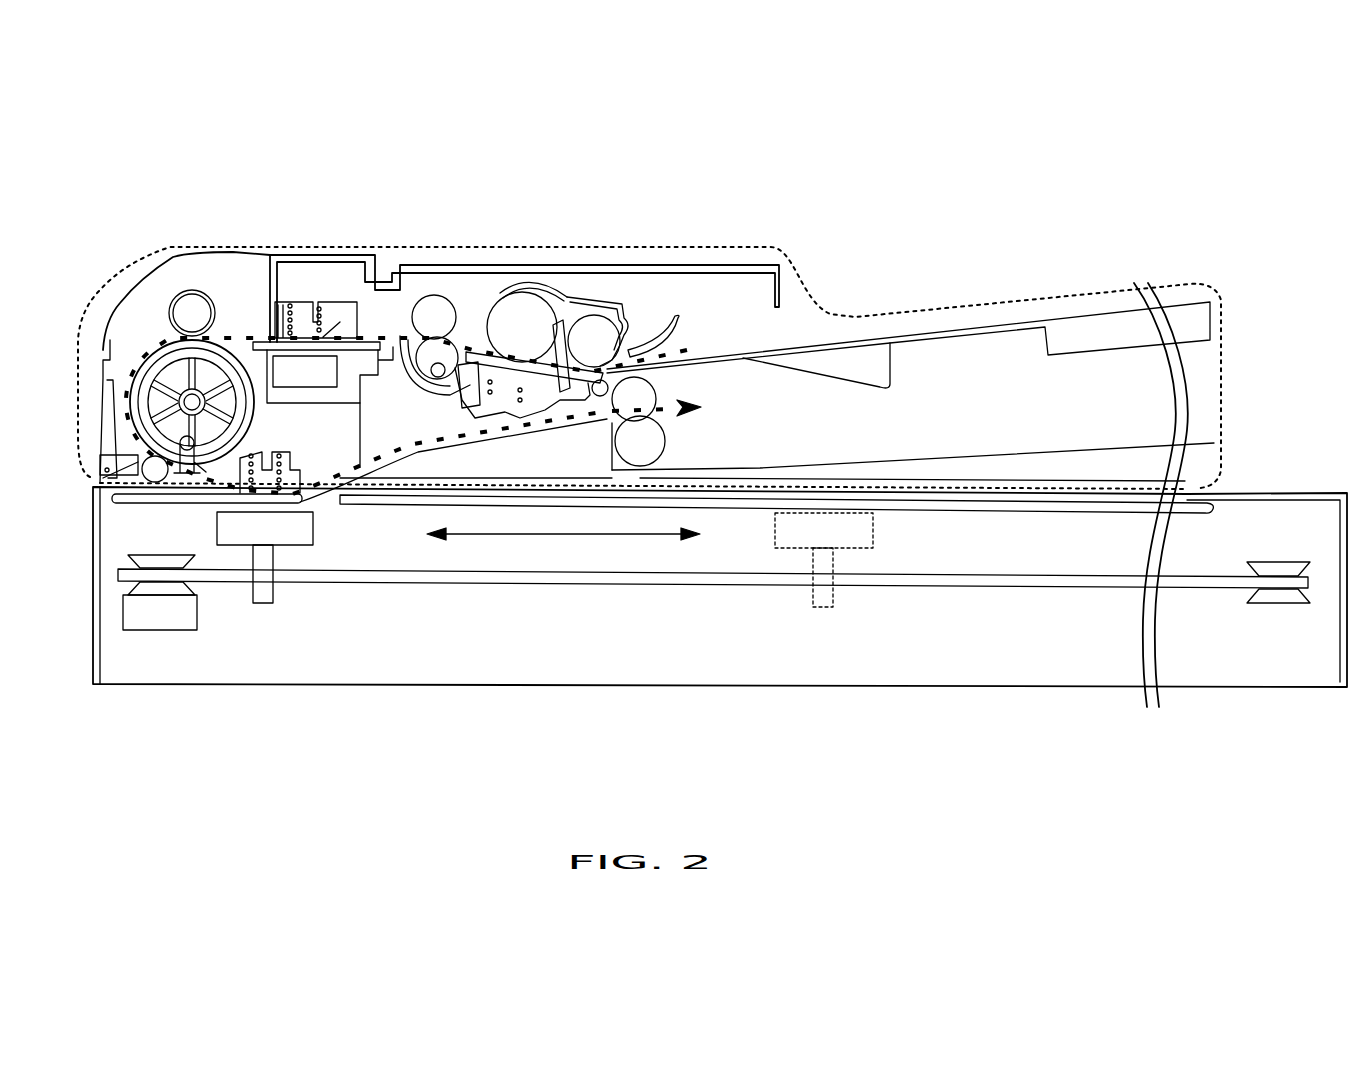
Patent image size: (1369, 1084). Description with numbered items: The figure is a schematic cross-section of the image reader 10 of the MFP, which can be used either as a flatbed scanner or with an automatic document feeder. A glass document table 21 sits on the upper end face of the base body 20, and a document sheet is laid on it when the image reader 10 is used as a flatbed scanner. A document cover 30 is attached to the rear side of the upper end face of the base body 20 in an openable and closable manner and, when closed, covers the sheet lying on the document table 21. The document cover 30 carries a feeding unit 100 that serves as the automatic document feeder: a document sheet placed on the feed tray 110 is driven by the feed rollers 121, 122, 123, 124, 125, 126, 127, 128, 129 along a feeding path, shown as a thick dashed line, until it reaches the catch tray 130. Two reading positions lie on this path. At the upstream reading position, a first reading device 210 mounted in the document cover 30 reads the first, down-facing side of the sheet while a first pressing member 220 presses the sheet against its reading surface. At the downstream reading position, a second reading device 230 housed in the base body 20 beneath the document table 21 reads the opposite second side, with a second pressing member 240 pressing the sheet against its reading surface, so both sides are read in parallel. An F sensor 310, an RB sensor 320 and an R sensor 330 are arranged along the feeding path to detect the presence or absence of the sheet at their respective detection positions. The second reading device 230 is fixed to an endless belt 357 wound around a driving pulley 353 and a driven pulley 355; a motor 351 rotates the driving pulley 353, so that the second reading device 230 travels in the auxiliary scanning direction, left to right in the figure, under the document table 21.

The image reader 10 is at (166, 178).
The base body 20 is at (307, 665).
The document table 21 is at (968, 500).
The document cover 30 is at (675, 247).
The feeding unit 100 is at (479, 294).
The feed tray 110 is at (801, 346).
The feed roller 121 is at (600, 340).
The feed roller 122 is at (520, 312).
The feed roller 123 is at (441, 348).
The feed roller 124 is at (430, 312).
The feed roller 125 is at (187, 313).
The feed roller 126 is at (147, 372).
The feed roller 127 is at (152, 482).
The feed roller 128 is at (645, 392).
The feed roller 129 is at (660, 444).
The catch tray 130 is at (980, 466).
The first reading device 210 is at (255, 338).
The first pressing member 220 is at (307, 332).
The second reading device 230 is at (313, 528).
The second pressing member 240 is at (247, 448).
The F sensor 310 is at (598, 320).
The RB sensor 320 is at (383, 330).
The R sensor 330 is at (182, 478).
The motor 351 is at (157, 620).
The driving pulley 353 is at (180, 590).
The driven pulley 355 is at (1278, 600).
The endless belt 357 is at (517, 581).